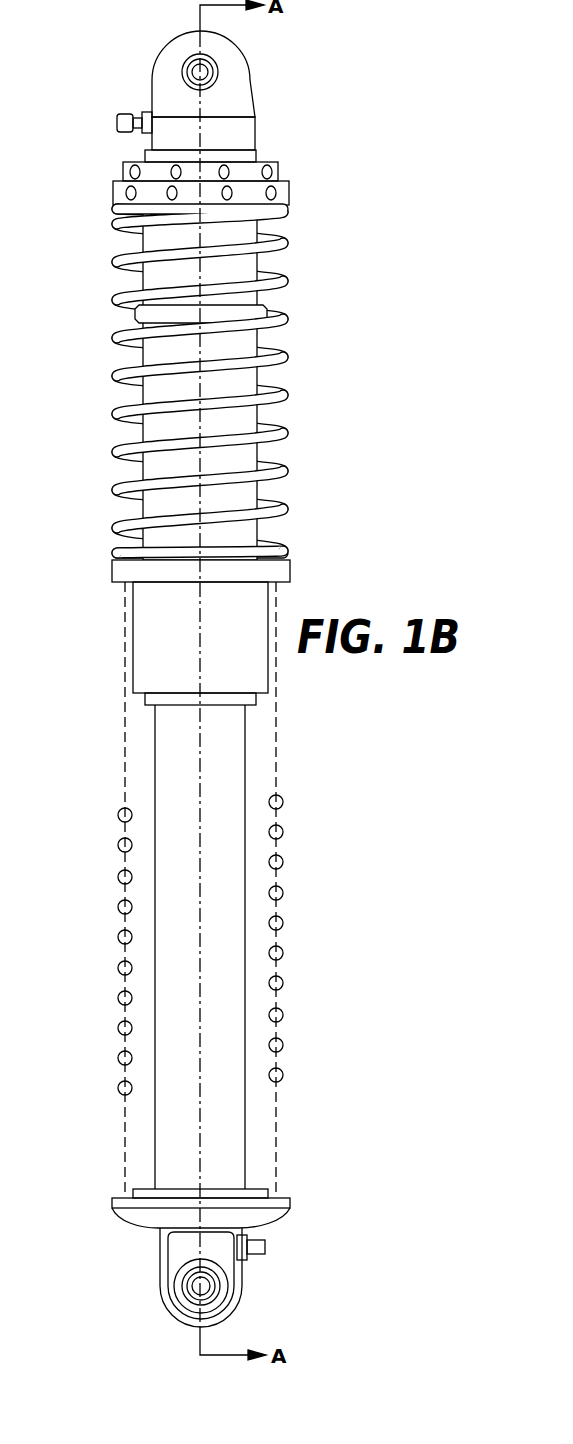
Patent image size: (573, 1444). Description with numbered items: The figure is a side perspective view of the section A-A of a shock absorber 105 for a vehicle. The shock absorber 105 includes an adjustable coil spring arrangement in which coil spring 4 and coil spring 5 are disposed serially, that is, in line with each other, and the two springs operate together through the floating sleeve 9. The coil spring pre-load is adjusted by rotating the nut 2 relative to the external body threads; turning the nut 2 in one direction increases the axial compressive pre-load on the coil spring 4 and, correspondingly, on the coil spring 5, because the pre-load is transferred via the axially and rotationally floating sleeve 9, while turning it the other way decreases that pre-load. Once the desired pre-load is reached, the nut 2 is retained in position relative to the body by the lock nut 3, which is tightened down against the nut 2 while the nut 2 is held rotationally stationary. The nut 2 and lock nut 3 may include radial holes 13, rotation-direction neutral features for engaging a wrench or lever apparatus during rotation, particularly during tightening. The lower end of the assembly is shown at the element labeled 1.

The shock absorber 105 is at (114, 66).
The lock nut 3 is at (122, 168).
The nut 2 is at (115, 193).
The radial holes 13 is at (274, 194).
The coil spring 4 is at (122, 413).
The floating sleeve 9 is at (112, 572).
The coil spring 5 is at (122, 905).
The bottom plate 1 is at (118, 1210).